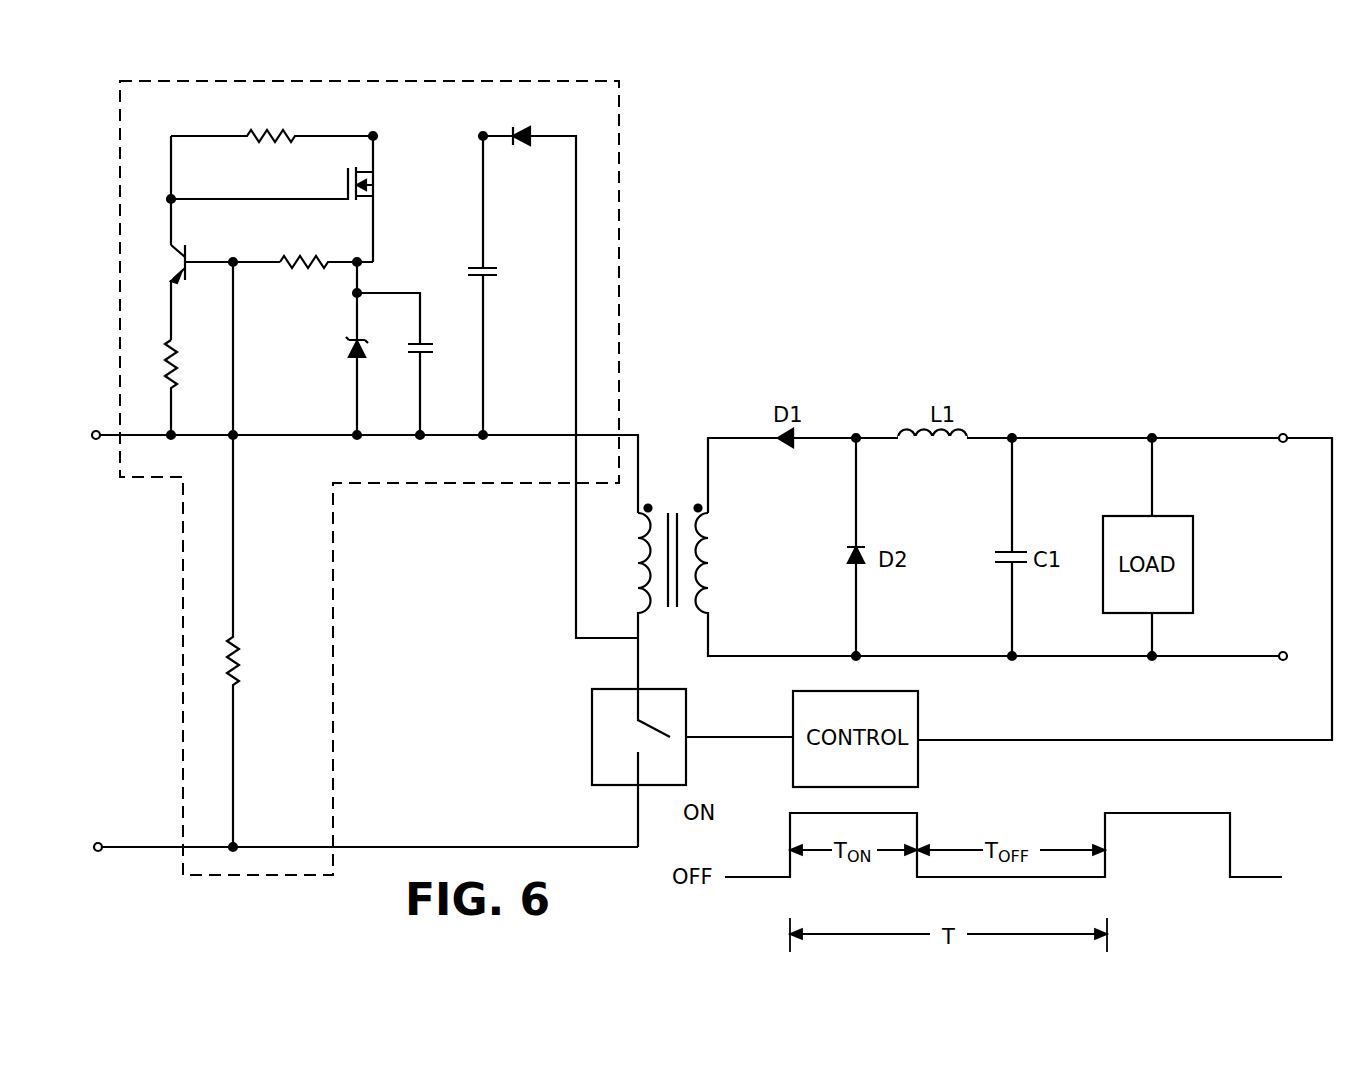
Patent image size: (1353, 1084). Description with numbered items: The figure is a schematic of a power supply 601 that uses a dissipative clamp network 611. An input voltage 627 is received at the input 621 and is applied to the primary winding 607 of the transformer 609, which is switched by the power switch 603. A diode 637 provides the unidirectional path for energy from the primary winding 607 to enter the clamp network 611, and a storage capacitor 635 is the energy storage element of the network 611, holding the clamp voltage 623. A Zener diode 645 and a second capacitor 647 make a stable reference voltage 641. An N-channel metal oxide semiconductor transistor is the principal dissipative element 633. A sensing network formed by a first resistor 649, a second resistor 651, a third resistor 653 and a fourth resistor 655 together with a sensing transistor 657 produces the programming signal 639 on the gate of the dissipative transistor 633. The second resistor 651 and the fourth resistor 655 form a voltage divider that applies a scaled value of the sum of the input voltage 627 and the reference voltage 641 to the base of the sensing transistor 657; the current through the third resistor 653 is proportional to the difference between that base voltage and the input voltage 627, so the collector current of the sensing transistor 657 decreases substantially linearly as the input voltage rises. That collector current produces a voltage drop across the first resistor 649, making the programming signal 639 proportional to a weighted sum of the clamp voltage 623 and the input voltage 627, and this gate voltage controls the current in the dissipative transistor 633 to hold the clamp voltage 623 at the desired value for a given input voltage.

The power supply 601 is at (1152, 188).
The power switch Q1 603 is at (596, 770).
The primary winding 607 is at (628, 566).
The transformer 609 is at (675, 473).
The dissipative clamp network 611 is at (619, 168).
The input 621 is at (96, 426).
The clamp voltage V_CLAMP 623 is at (543, 318).
The input voltage V_IN 627 is at (98, 622).
The dissipative element transistor Q2 633 is at (382, 176).
The capacitor C2 635 is at (465, 258).
The diode D3 637 is at (512, 132).
The programming signal S1 639 is at (240, 192).
The reference voltage V_REF 641 is at (266, 342).
The Zener diode VR1 645 is at (336, 370).
The capacitor C3 647 is at (415, 362).
The resistor R1 649 is at (312, 113).
The resistor R2 651 is at (330, 242).
The resistor R3 653 is at (201, 356).
The resistor R4 655 is at (270, 640).
The transistor Q3 657 is at (218, 242).